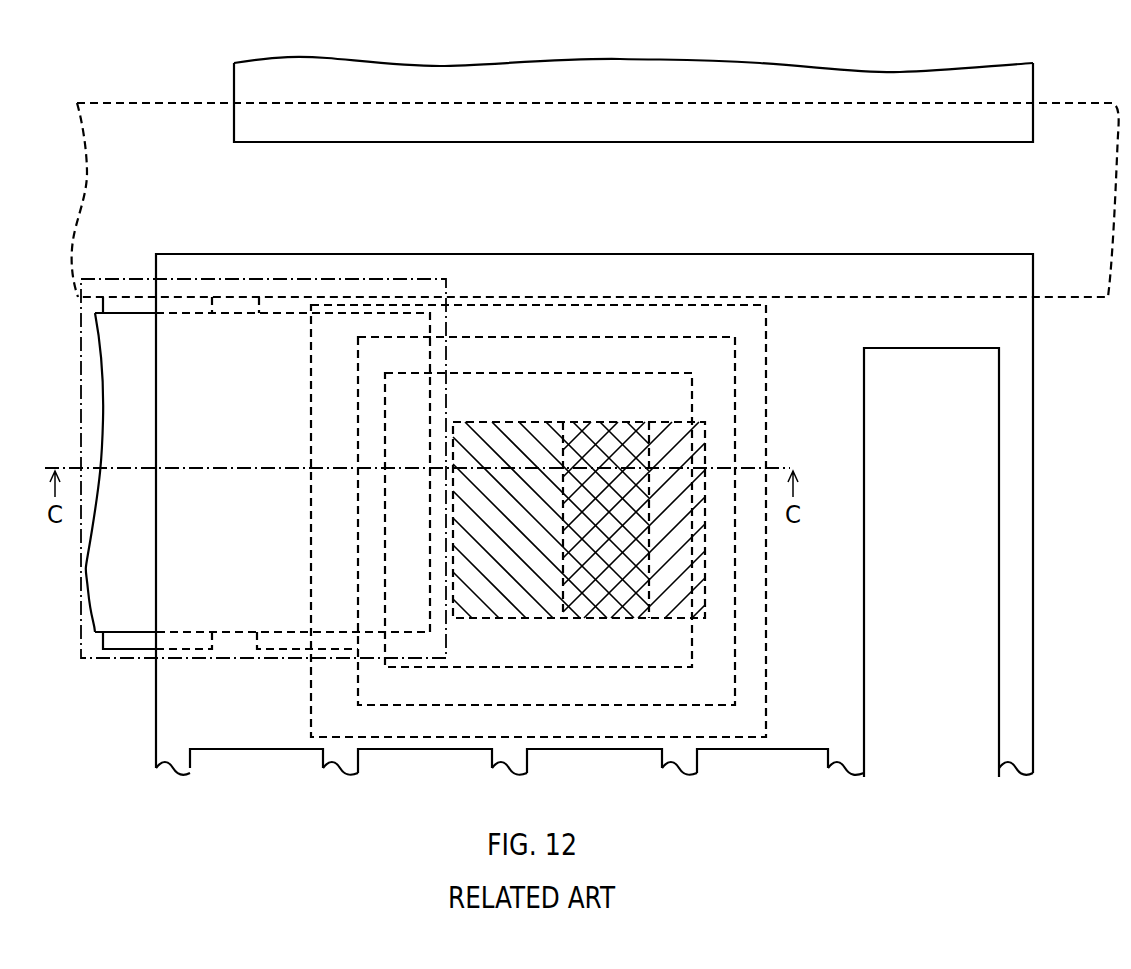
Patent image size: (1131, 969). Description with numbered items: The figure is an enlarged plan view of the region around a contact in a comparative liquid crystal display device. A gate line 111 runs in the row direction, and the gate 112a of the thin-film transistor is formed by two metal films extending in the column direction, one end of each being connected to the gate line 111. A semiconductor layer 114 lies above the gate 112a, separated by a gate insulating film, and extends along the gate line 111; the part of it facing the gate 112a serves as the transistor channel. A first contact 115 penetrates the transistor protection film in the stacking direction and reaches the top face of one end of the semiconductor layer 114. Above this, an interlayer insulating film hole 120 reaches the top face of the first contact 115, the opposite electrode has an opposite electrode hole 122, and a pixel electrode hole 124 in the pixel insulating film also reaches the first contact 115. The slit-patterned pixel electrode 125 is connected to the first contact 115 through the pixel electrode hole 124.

The gate line 111 is at (1073, 283).
The gate 112a is at (207, 650).
The semiconductor layer 114 is at (125, 620).
The first contact 115 is at (618, 737).
The interlayer insulating film hole 120 is at (425, 667).
The opposite electrode hole 122 is at (735, 647).
The pixel electrode hole 124 is at (548, 598).
The pixel electrode 125 is at (1026, 73).